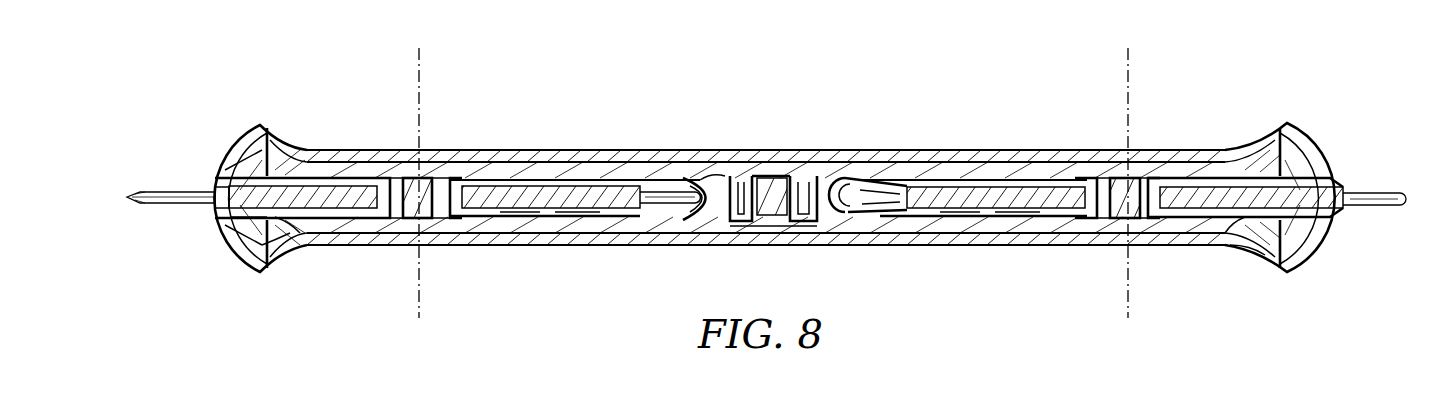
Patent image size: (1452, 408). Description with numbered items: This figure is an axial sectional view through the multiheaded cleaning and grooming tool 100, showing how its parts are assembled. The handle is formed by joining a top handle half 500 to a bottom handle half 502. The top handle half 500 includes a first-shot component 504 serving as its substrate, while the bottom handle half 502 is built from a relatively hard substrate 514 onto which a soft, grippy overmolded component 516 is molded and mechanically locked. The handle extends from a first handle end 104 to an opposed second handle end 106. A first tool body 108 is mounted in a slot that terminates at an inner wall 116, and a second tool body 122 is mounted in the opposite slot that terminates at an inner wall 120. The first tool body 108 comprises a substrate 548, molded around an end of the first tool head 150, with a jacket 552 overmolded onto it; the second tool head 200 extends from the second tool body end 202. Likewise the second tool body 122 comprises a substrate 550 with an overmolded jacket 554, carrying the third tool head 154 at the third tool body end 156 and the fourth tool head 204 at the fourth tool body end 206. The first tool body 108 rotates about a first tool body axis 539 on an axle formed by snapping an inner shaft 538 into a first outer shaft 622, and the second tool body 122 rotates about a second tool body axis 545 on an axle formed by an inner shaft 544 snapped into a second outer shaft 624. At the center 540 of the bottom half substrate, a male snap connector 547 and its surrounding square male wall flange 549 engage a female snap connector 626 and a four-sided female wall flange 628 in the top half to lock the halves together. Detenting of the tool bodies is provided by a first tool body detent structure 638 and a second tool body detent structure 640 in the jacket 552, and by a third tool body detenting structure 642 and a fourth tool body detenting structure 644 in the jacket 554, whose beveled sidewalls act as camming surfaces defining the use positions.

The multiheaded cleaning and grooming tool 100 is at (545, 60).
The first handle end 104 is at (225, 163).
The second handle end 106 is at (1318, 145).
The first tool body 108 is at (277, 200).
The inner wall 116 is at (700, 168).
The inner wall 120 is at (858, 218).
The second tool body 122 is at (1003, 205).
The first tool head 150 is at (152, 192).
The third tool head 154 is at (1378, 205).
The third tool body end 156 is at (1335, 178).
The second tool head 200 is at (663, 225).
The second tool body end 202 is at (628, 178).
The fourth tool head 204 is at (888, 218).
The fourth tool body end 206 is at (913, 188).
The top handle half 500 is at (517, 150).
The bottom handle half 502 is at (508, 240).
The first-shot component 504 is at (1220, 168).
The substrate 514 is at (465, 245).
The overmolded component 516 is at (1245, 262).
The inner shaft 538 is at (440, 178).
The first tool body axis 539 is at (418, 70).
The center 540 is at (770, 166).
The inner shaft 544 is at (1115, 178).
The second tool body axis 545 is at (1127, 70).
The male snap connector 547 is at (772, 210).
The substrate 548 is at (578, 208).
The male wall flange 549 is at (812, 168).
The substrate 550 is at (1028, 192).
The jacket 552 is at (598, 212).
The jacket 554 is at (1168, 235).
The first outer shaft 622 is at (390, 220).
The second outer shaft 624 is at (1095, 220).
The female snap connector 626 is at (737, 226).
The female wall flange 628 is at (722, 182).
The first tool body detent structure 638 is at (300, 228).
The second tool body detent structure 640 is at (525, 220).
The third tool body detenting structure 642 is at (1225, 242).
The fourth tool body detenting structure 644 is at (1022, 214).